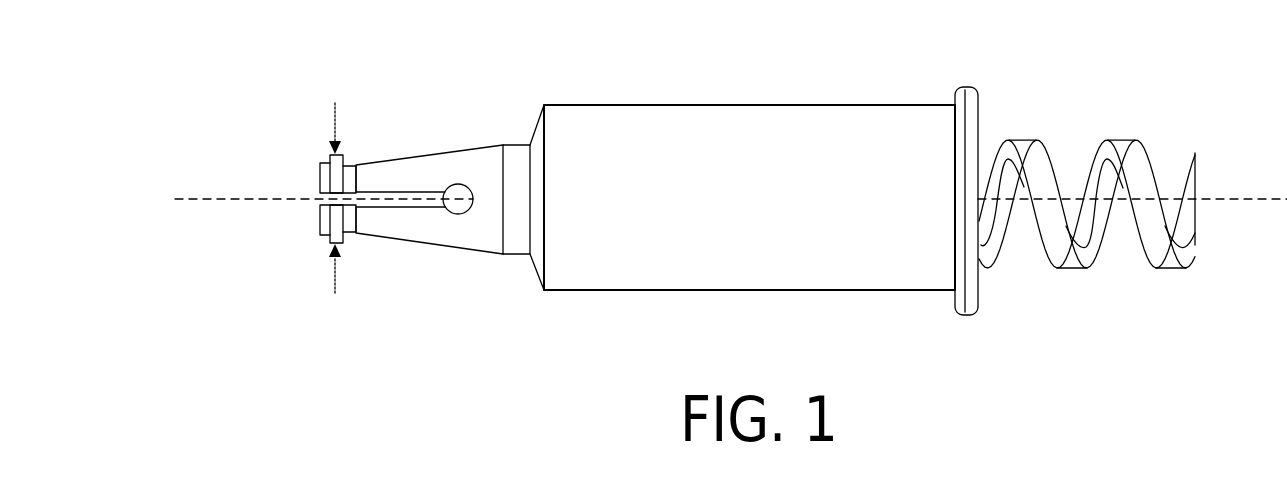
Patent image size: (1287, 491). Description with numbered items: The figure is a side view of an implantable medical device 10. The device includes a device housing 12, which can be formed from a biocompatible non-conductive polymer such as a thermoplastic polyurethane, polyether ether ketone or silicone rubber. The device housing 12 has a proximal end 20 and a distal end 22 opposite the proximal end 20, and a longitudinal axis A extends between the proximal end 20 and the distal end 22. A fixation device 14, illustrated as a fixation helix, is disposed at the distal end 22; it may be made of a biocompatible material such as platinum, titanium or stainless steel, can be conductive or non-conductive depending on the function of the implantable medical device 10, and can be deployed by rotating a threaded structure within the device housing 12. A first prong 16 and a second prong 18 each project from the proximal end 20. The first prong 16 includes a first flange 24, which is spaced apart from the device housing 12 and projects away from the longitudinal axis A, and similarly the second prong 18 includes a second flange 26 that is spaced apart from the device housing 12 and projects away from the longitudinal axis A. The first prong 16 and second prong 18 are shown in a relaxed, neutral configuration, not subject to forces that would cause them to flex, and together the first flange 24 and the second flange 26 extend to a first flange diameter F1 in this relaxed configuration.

The implantable medical device 10 is at (708, 172).
The device housing 12 is at (687, 105).
The fixation device 14 is at (1045, 141).
The first prong 16 is at (421, 146).
The second prong 18 is at (439, 254).
The proximal end 20 is at (490, 145).
The distal end 22 is at (977, 88).
The first flange 24 is at (327, 152).
The second flange 26 is at (323, 238).
The first flange diameter F1 is at (330, 265).
The longitudinal axis A is at (1222, 195).